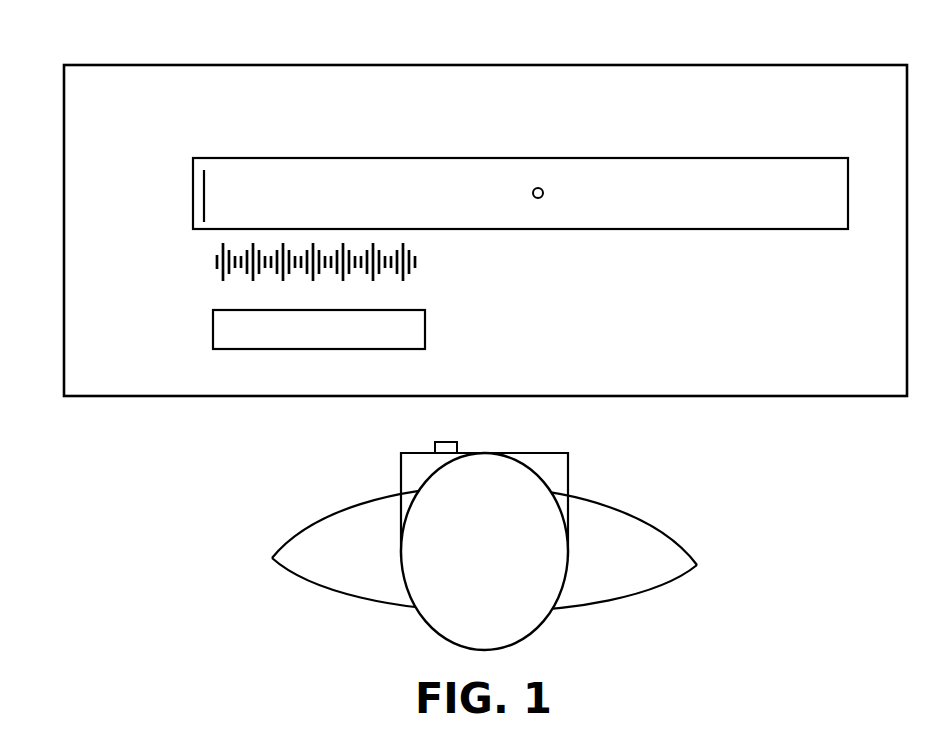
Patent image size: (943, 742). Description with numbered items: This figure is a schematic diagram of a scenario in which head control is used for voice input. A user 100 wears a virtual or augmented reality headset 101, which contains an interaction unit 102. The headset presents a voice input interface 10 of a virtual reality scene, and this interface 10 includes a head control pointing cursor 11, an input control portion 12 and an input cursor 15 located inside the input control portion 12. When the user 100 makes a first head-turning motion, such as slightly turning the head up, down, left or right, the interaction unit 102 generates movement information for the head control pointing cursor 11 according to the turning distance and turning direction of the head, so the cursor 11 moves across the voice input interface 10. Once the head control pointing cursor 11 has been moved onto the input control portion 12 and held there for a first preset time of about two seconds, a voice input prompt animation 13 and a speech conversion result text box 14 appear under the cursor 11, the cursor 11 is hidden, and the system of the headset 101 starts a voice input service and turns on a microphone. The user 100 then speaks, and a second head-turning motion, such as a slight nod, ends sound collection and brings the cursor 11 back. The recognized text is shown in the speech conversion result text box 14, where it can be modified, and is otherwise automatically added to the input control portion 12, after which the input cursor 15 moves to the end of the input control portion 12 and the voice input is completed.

The voice input interface 10 is at (681, 65).
The head control pointing cursor 11 is at (543, 201).
The input control portion 12 is at (293, 158).
The voice input prompt animation 13 is at (217, 266).
The speech conversion result text box 14 is at (213, 325).
The input cursor 15 is at (203, 183).
The user 100 is at (272, 558).
The virtual or augmented reality headset 101 is at (568, 479).
The interaction unit 102 is at (435, 442).